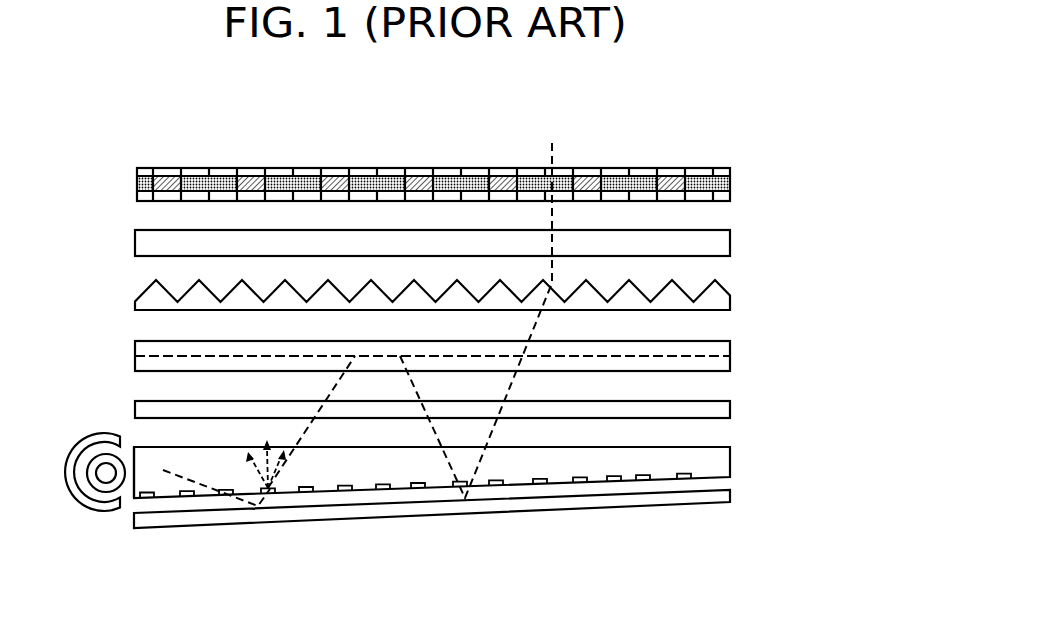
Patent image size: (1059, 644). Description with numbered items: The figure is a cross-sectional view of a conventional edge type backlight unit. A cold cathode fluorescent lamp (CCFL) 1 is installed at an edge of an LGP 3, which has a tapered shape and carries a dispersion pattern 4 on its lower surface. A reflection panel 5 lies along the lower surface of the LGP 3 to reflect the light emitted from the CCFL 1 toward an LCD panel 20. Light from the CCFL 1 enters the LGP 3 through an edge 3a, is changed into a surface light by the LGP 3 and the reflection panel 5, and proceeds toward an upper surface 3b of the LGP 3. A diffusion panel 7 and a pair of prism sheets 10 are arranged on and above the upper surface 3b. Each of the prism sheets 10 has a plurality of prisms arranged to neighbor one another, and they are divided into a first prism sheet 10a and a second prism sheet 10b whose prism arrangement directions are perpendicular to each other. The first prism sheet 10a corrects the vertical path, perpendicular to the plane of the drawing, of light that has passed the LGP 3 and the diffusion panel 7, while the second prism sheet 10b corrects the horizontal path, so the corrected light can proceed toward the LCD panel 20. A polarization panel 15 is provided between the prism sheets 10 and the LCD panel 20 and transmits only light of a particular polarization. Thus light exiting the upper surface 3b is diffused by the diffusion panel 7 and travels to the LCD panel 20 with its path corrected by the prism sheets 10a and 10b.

The cold cathode fluorescent lamp 1 is at (102, 487).
The LGP 3 is at (448, 498).
The edge 3a is at (122, 510).
The upper surface 3b is at (700, 447).
The dispersion pattern 4 is at (382, 489).
The reflection panel 5 is at (720, 495).
The diffusion panel 7 is at (725, 410).
The prism sheets 10 is at (509, 337).
The first prism sheet 10a is at (720, 367).
The second prism sheet 10b is at (730, 305).
The polarization panel 15 is at (720, 246).
The LCD panel 20 is at (733, 186).